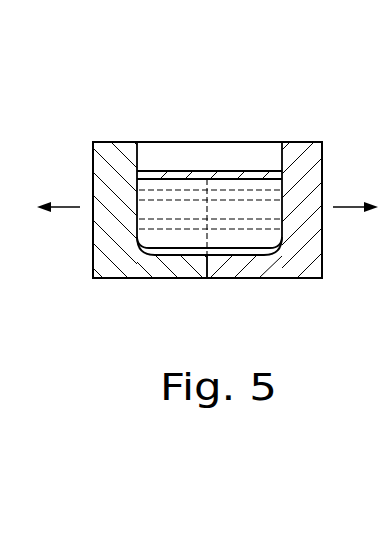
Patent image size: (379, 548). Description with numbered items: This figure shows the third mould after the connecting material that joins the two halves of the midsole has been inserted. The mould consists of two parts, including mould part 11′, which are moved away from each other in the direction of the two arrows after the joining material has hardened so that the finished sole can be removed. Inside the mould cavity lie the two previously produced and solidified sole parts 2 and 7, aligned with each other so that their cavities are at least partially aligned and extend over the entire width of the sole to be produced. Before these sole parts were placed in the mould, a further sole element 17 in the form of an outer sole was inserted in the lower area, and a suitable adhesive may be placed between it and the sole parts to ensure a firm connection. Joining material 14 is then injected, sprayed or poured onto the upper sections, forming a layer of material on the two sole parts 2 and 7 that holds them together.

The mould part 11′ is at (113, 158).
The sole part 2 is at (172, 203).
The joining material 14 is at (218, 180).
The sole part 7 is at (258, 207).
The sole element 17 is at (233, 262).